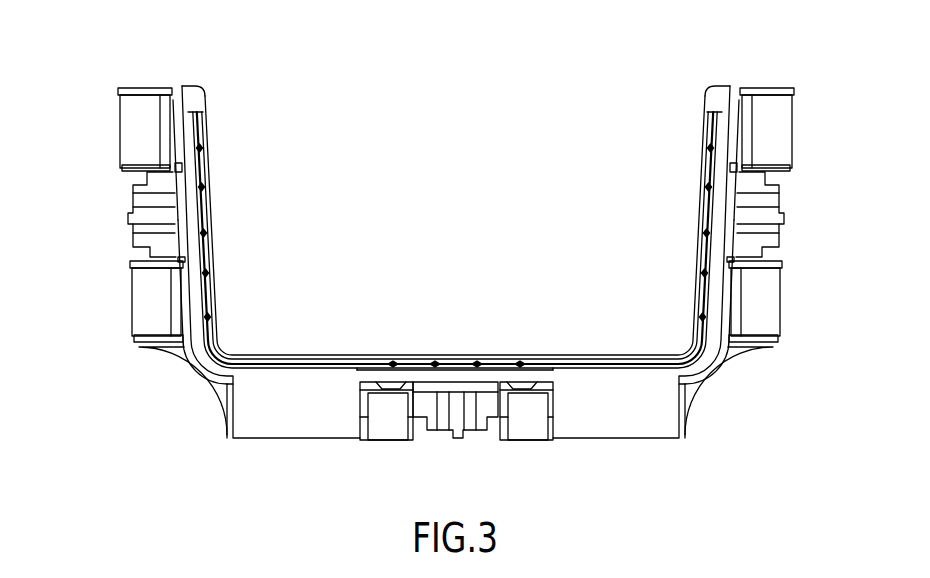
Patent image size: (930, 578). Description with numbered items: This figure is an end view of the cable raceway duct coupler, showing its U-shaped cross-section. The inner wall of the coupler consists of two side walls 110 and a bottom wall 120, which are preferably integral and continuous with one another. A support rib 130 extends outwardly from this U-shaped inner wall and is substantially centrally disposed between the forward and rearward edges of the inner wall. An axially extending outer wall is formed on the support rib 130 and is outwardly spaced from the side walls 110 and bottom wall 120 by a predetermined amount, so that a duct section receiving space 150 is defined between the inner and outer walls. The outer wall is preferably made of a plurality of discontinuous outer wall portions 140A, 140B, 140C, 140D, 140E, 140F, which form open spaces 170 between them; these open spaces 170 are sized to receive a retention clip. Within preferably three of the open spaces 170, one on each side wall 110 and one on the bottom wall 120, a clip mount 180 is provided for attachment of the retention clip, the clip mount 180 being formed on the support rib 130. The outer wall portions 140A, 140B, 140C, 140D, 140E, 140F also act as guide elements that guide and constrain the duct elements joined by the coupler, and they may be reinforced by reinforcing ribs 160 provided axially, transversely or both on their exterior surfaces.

The side wall 110 is at (207, 187).
The bottom wall 120 is at (433, 356).
The support rib 130 is at (188, 95).
The outer wall portion 140A is at (175, 133).
The outer wall portion 140B is at (220, 342).
The outer wall portion 140C is at (390, 382).
The outer wall portion 140D is at (518, 382).
The outer wall portion 140E is at (727, 316).
The outer wall portion 140F is at (737, 132).
The duct section receiving space 150 is at (205, 287).
The reinforcing rib 160 is at (143, 86).
The open space 170 is at (134, 235).
The clip mount 180 is at (133, 203).